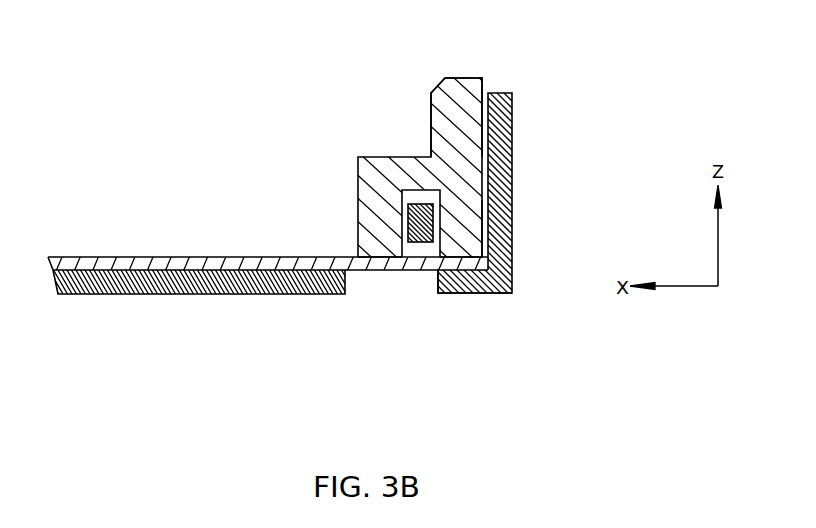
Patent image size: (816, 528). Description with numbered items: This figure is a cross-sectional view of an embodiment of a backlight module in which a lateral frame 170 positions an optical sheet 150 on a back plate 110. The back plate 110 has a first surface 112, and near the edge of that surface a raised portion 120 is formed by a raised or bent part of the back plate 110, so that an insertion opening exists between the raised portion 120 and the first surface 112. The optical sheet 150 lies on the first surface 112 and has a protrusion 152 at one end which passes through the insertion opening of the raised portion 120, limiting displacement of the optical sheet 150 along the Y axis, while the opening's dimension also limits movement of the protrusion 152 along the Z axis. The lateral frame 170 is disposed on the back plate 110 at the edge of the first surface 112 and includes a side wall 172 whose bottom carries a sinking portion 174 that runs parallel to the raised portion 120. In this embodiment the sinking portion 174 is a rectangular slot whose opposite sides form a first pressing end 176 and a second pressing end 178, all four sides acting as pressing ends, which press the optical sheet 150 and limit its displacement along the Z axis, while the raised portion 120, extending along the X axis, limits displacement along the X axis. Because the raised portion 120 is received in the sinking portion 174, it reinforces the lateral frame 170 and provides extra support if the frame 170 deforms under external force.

The back plate 110 is at (505, 228).
The first surface 112 is at (171, 272).
The raised portion 120 is at (420, 227).
The optical sheet 150 is at (153, 257).
The protrusion 152 is at (453, 266).
The lateral frame 170 is at (471, 58).
The side wall 172 is at (468, 123).
The sinking portion 174 is at (403, 205).
The first pressing end 176 is at (375, 257).
The second pressing end 178 is at (472, 248).